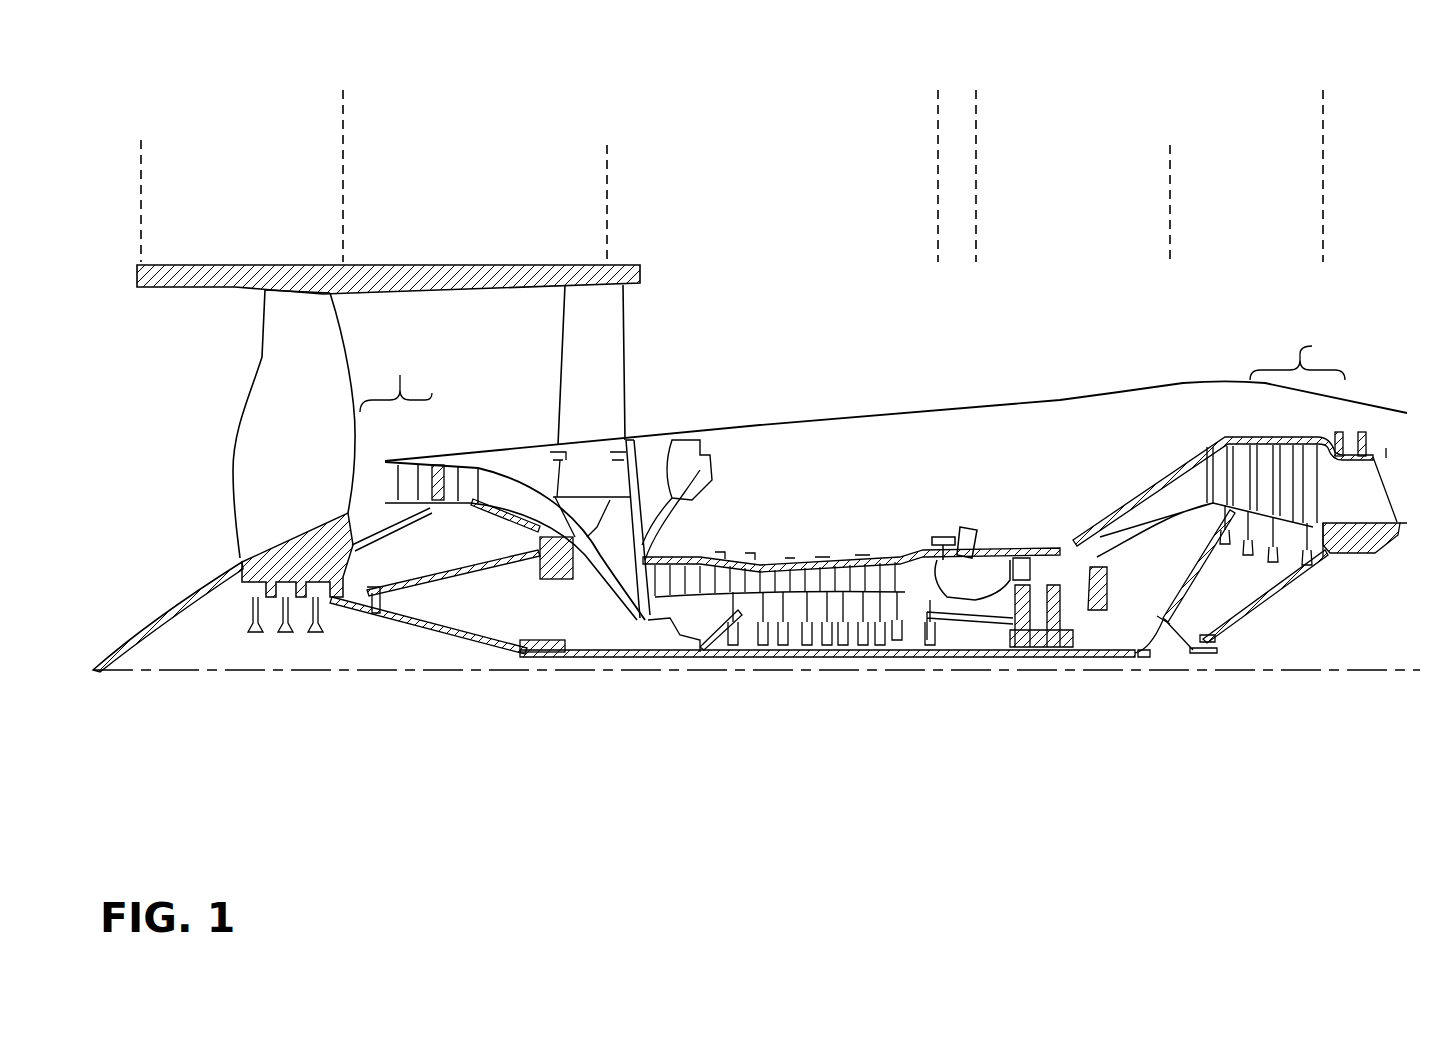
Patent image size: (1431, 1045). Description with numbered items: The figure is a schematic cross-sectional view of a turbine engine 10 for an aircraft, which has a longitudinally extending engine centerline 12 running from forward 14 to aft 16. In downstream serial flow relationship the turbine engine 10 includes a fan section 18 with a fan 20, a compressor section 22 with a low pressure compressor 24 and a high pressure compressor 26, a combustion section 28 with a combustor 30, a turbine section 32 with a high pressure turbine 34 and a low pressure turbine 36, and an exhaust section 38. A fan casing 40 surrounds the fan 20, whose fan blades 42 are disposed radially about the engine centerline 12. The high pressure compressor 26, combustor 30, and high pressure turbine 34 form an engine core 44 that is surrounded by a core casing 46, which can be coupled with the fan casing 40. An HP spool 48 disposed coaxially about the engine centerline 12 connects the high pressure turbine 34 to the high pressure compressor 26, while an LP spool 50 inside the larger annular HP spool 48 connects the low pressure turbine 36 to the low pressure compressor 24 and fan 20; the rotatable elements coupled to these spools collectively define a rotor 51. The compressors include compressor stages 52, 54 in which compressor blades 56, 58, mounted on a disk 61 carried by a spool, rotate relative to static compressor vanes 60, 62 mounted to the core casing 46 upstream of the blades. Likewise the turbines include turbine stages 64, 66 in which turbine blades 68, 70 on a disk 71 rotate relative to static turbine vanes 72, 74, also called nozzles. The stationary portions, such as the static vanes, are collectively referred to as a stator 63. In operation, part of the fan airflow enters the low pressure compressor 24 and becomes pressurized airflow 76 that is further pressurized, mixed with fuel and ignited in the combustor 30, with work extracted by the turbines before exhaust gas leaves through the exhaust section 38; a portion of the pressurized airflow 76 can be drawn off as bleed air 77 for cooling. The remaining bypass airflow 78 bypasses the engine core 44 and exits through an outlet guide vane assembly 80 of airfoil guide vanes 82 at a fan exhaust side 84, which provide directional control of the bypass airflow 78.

The turbine engine 10 is at (1337, 190).
The engine centerline 12 is at (222, 672).
The forward 14 is at (172, 399).
The aft 16 is at (1423, 492).
The fan section 18 is at (141, 162).
The fan 20 is at (215, 518).
The compressor section 22 is at (343, 90).
The low pressure compressor 24 is at (343, 162).
The high pressure compressor 26 is at (607, 162).
The combustion section 28 is at (938, 193).
The combustor 30 is at (978, 572).
The turbine section 32 is at (976, 92).
The high pressure turbine 34 is at (976, 193).
The low pressure turbine 36 is at (1170, 162).
The exhaust section 38 is at (1386, 470).
The fan casing 40 is at (375, 265).
The fan blades 42 is at (313, 340).
The engine core 44 is at (898, 447).
The core casing 46 is at (1147, 483).
The HP spool 48 is at (940, 620).
The LP spool 50 is at (540, 657).
The rotor 51 is at (800, 662).
The compressor stages 52 is at (502, 489).
The compressor stages 54 is at (765, 530).
The compressor blades 56 is at (428, 465).
The compressor blades 58 is at (700, 565).
The static compressor vanes 60 is at (405, 470).
The disk 61 is at (440, 505).
The static compressor vanes 62 is at (675, 550).
The stator 63 is at (670, 618).
The turbine stages 64 is at (1077, 490).
The turbine stages 66 is at (1299, 355).
The turbine blades 68 is at (1027, 555).
The turbine blades 70 is at (1307, 448).
The disk 71 is at (1222, 515).
The static turbine vanes 72 is at (1016, 578).
The static turbine vanes 74 is at (1297, 440).
The pressurized airflow 76 is at (577, 577).
The bleed air 77 is at (817, 518).
The bypass airflow 78 is at (668, 340).
The outlet guide vane assembly 80 is at (642, 402).
The airfoil guide vanes 82 is at (573, 378).
The fan exhaust side 84 is at (642, 315).